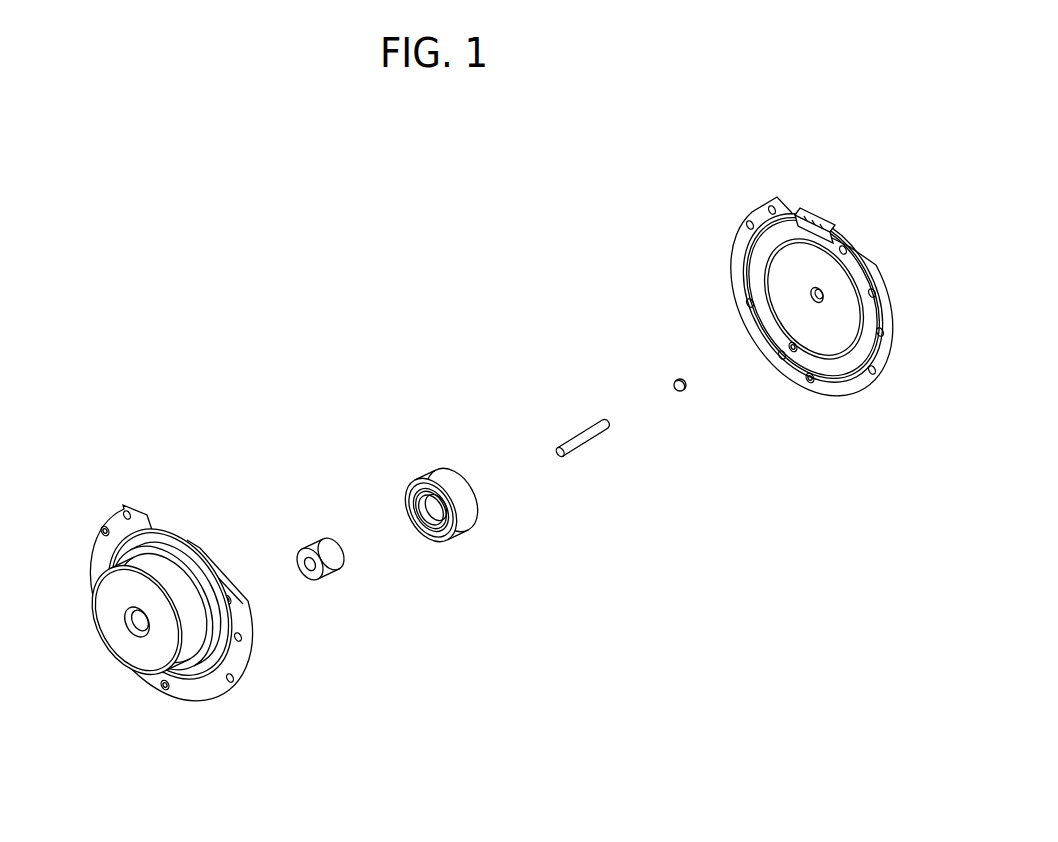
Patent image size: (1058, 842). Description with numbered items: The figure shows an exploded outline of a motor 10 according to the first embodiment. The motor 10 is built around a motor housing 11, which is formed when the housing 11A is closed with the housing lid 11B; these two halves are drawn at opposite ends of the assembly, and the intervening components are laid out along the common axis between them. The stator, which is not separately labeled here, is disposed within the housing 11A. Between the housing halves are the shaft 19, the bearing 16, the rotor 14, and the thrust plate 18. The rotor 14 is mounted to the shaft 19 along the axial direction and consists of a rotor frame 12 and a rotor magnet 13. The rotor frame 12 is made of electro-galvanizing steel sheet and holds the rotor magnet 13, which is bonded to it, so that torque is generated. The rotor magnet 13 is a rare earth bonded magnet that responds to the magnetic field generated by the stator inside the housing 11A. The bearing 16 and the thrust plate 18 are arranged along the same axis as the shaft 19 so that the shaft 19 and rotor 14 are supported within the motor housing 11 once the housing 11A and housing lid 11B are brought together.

The motor 10 is at (484, 469).
The motor housing 11 is at (492, 493).
The housing 11A is at (212, 655).
The housing lid 11B is at (848, 383).
The rotor 14 is at (425, 462).
The rotor frame 12 is at (415, 483).
The rotor magnet 13 is at (447, 482).
The bearing 16 is at (335, 562).
The thrust plate 18 is at (692, 414).
The shaft 19 is at (585, 437).